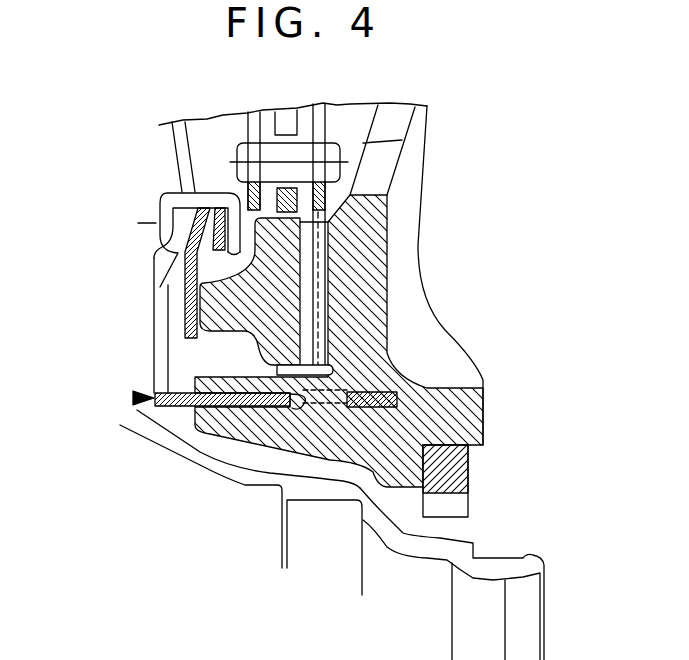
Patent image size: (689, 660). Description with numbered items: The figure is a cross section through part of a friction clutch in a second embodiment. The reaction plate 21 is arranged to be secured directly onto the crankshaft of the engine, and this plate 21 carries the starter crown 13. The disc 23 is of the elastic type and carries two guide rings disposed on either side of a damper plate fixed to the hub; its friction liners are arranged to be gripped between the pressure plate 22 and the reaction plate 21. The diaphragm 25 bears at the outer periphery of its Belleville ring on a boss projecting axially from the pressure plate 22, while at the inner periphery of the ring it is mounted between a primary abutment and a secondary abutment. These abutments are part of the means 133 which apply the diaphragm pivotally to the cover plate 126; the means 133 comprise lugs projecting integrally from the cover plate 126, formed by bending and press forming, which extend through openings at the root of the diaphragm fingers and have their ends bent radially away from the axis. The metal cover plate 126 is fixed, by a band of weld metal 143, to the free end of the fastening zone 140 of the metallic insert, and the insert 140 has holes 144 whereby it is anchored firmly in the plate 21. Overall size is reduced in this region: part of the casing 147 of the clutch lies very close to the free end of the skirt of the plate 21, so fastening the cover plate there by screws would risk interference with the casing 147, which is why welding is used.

The disc 23 is at (327, 130).
The means which apply the diaphragm pivotally to the cover plate 133 is at (160, 203).
The diaphragm 25 is at (185, 287).
The cover plate 126 is at (155, 330).
The pressure plate 22 is at (200, 352).
The band of weld metal 143 is at (133, 398).
The fastening zone of the metallic insert 140 is at (157, 443).
The holes 144 is at (297, 401).
The reaction plate 21 is at (478, 415).
The starter crown 13 is at (467, 468).
The casing 147 is at (503, 557).